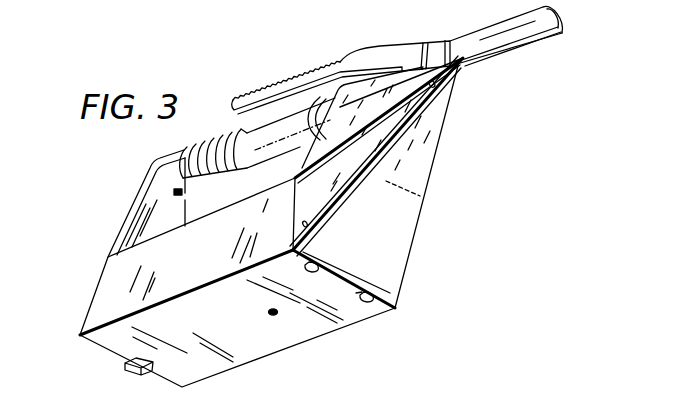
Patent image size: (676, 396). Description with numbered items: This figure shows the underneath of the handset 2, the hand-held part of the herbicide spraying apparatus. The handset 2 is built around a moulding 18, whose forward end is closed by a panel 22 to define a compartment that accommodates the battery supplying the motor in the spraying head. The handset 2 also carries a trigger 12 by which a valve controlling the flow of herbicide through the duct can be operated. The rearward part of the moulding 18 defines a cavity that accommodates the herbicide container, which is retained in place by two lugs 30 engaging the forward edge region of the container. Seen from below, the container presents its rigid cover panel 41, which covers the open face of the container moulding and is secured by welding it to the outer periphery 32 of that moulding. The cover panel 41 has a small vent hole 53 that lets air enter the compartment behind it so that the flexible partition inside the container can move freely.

The handset 2 is at (94, 372).
The trigger 12 is at (287, 80).
The moulding 18 is at (93, 298).
The panel 22 is at (428, 173).
The lugs 30 is at (320, 262).
The outer periphery 32 is at (362, 283).
The cover panel 41 is at (242, 368).
The vent hole 53 is at (268, 314).